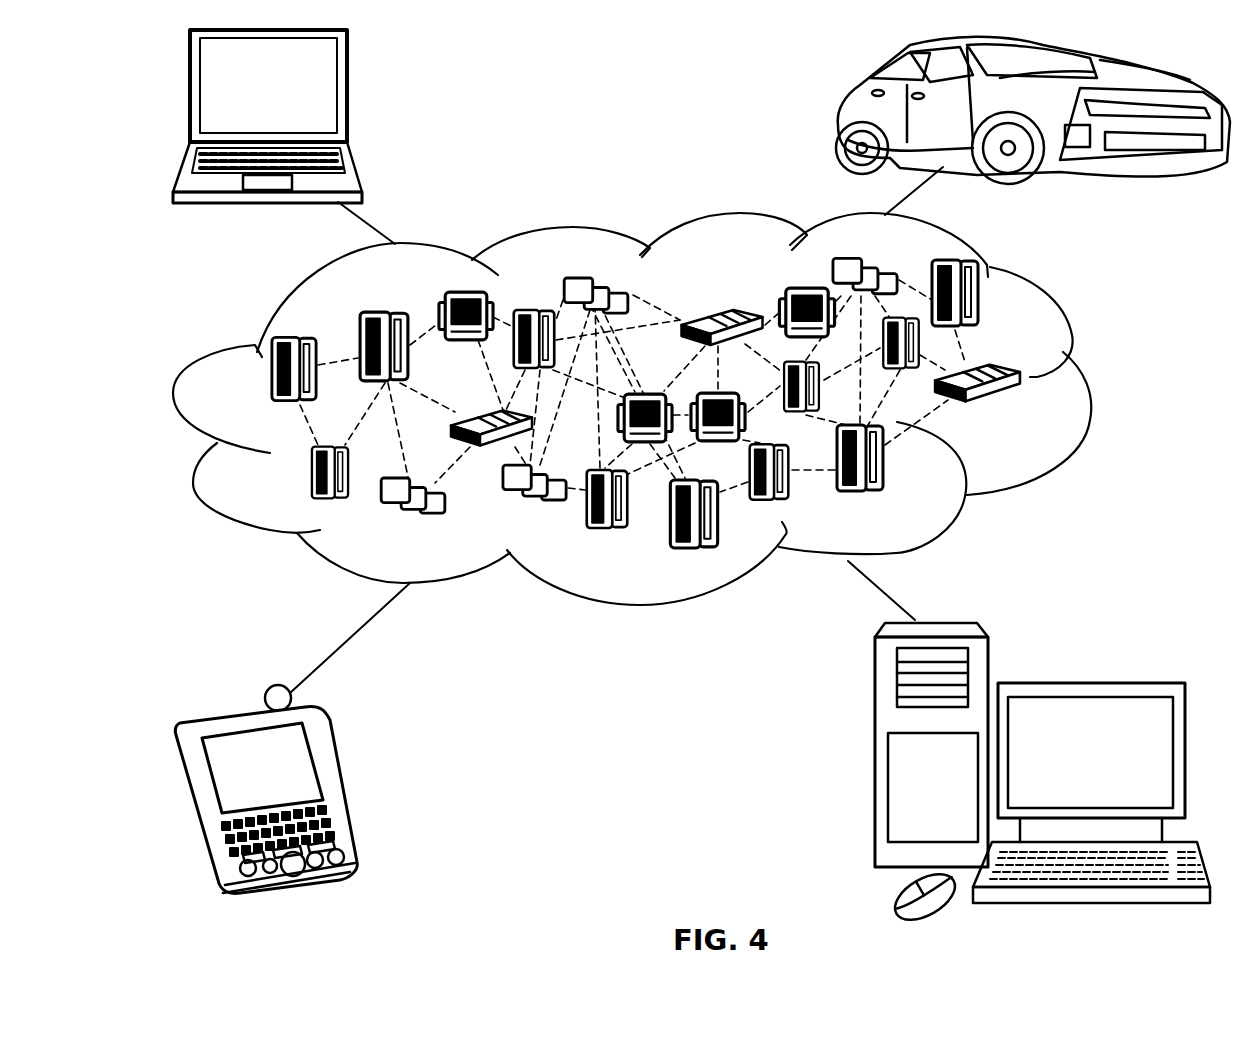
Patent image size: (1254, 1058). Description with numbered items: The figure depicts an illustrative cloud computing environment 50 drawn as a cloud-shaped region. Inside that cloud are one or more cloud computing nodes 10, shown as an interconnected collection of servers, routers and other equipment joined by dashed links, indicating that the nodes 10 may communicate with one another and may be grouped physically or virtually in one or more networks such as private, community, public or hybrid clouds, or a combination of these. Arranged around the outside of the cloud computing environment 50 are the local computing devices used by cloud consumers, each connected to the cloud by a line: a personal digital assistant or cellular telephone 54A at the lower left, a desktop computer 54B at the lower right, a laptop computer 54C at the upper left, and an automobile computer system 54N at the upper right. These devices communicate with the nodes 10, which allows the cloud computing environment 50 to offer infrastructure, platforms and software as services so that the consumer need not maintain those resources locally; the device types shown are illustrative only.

The cloud computing nodes 10 is at (1028, 416).
The cloud computing environment 50 is at (1090, 382).
The personal digital assistant (PDA) or cellular telephone 54A is at (333, 780).
The desktop computer 54B is at (1090, 684).
The laptop computer 54C is at (349, 99).
The automobile computer system 54N is at (843, 115).